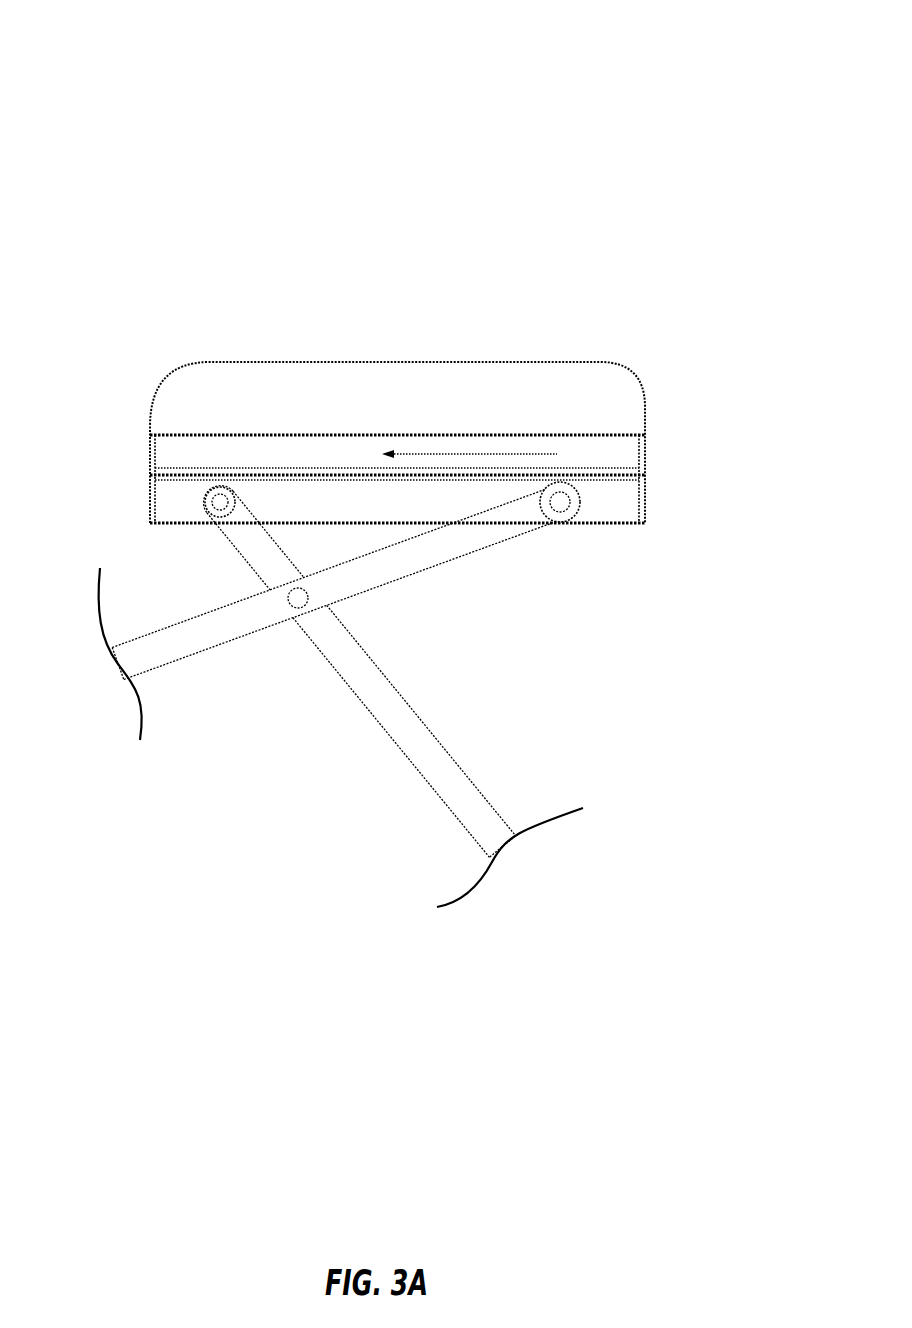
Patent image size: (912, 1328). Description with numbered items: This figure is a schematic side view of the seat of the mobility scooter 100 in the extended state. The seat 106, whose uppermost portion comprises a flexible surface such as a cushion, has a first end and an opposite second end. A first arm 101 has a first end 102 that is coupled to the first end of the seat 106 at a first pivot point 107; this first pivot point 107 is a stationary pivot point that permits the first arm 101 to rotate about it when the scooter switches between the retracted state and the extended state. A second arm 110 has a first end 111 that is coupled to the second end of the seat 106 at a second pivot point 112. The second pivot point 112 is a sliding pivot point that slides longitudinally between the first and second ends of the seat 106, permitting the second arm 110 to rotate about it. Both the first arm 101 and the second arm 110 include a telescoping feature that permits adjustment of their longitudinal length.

The mobility scooter 100 is at (665, 150).
The first arm 101 is at (388, 740).
The first end 102 is at (242, 540).
The seat 106 is at (380, 361).
The first pivot point 107 is at (205, 503).
The second arm 110 is at (145, 663).
The first end 111 is at (473, 528).
The second pivot point 112 is at (562, 503).